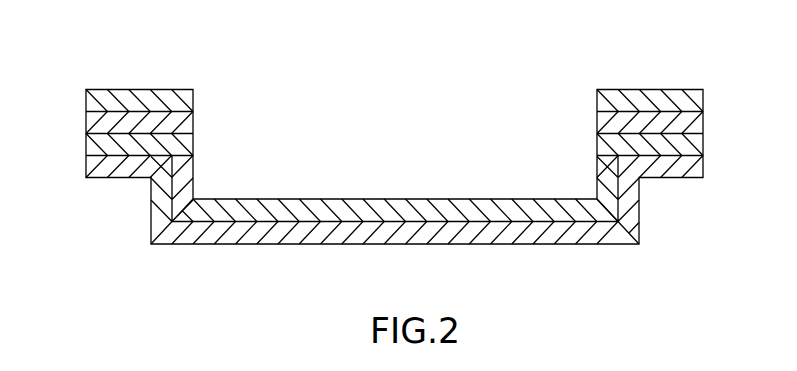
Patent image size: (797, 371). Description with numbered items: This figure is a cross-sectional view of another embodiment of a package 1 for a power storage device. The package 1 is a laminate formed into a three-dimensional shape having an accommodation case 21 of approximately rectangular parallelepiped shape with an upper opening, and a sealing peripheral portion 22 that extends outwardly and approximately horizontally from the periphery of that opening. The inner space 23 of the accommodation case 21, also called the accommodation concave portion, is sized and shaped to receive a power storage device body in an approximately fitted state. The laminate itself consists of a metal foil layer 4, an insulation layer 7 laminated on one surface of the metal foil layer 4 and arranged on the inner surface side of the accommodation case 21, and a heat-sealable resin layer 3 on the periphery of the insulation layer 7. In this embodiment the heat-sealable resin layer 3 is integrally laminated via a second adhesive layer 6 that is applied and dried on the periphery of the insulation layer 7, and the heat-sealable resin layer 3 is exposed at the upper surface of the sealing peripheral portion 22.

The package for a power storage device 1 is at (633, 64).
The accommodation case 21 is at (545, 227).
The sealing peripheral portion 22 is at (677, 100).
The inner space (accommodation concave portion) 23 is at (204, 173).
The heat-sealable resin layer 3 is at (105, 103).
The second adhesive layer 6 is at (105, 123).
The insulation layer 7 is at (105, 144).
The metal foil layer 4 is at (105, 164).